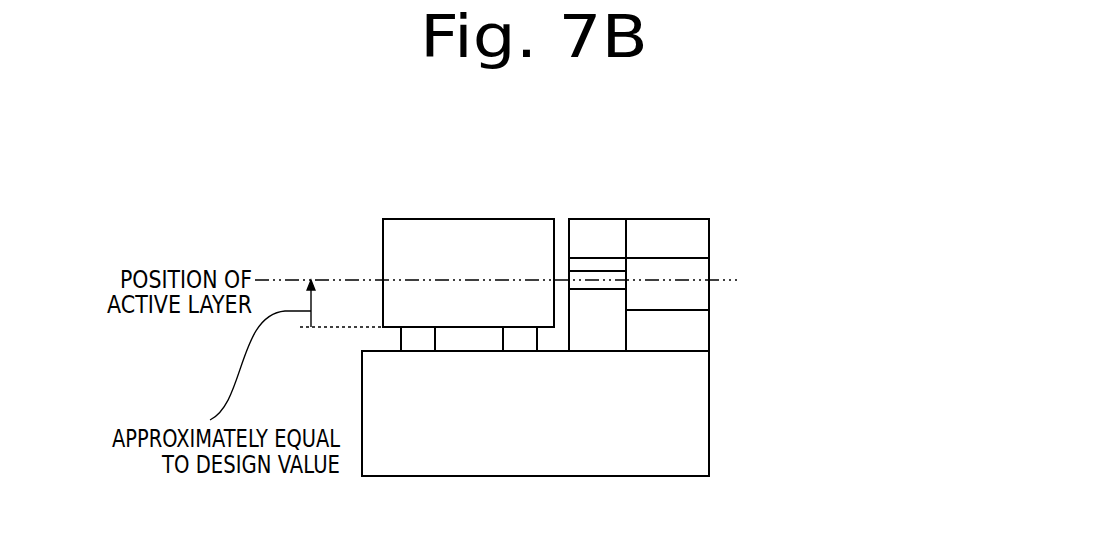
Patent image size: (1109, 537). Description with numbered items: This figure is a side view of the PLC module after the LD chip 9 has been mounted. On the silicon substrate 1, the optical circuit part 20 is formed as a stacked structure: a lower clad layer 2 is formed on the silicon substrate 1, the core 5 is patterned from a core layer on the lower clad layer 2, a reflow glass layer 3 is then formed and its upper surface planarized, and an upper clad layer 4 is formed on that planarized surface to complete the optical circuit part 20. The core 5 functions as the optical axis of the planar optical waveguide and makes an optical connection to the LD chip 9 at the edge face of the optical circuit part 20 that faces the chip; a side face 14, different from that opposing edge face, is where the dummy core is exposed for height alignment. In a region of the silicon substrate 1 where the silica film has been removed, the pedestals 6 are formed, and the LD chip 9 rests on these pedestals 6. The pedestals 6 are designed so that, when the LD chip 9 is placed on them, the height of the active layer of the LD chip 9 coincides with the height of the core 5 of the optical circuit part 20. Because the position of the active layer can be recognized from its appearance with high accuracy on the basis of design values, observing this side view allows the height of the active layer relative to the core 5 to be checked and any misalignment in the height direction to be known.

The silicon substrate 1 is at (700, 442).
The lower clad layer 2 is at (697, 333).
The reflow glass layer 3 is at (697, 270).
The upper clad layer 4 is at (697, 227).
The core 5 is at (600, 285).
The pedestals 6 is at (395, 336).
The LD chip 9 is at (407, 225).
The side face 14 is at (612, 230).
The optical circuit part 20 is at (582, 198).